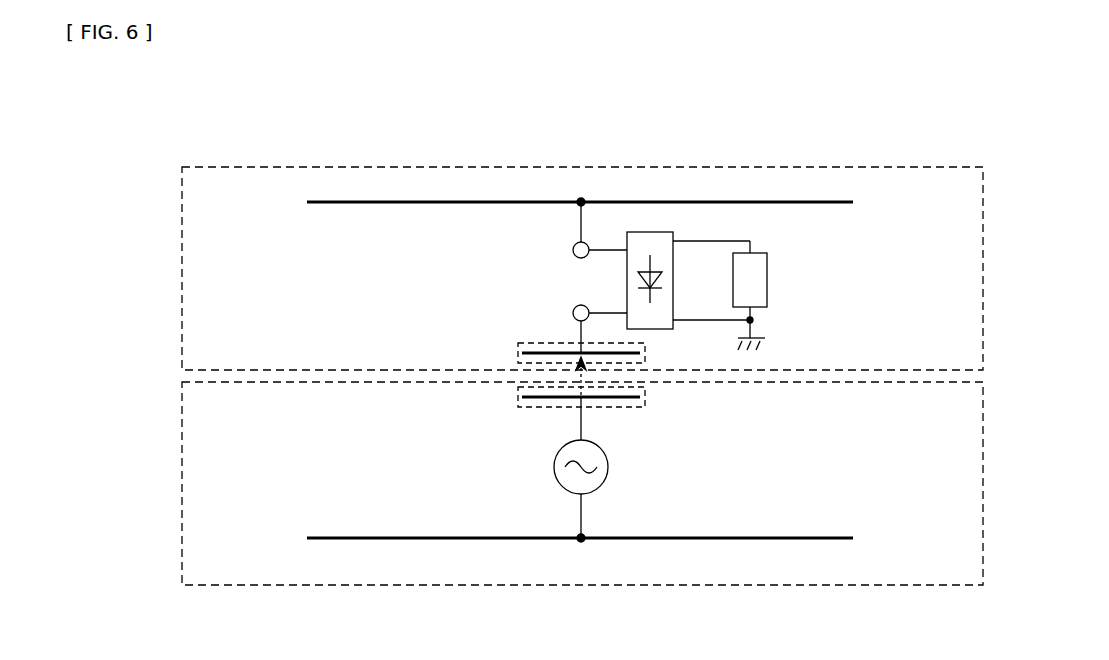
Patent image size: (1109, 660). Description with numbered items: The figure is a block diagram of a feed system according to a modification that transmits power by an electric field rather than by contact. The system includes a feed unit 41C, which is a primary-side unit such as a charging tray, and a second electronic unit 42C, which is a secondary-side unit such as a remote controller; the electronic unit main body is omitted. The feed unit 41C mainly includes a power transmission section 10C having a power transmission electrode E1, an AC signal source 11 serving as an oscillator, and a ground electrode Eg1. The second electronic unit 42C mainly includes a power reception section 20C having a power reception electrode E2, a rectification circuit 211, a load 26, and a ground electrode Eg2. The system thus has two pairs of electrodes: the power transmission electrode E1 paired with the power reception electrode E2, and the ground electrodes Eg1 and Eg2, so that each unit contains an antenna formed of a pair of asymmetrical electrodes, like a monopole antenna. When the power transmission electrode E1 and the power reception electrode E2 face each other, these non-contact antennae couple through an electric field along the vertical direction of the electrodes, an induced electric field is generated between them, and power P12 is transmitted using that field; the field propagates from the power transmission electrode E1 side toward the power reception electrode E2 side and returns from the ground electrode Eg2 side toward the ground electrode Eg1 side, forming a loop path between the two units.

The second electronic unit 42C is at (580, 166).
The feed unit 41C is at (582, 586).
The ground electrode Eg2 is at (750, 203).
The ground electrode Eg1 is at (754, 537).
The rectification circuit 211 is at (626, 282).
The load 26 is at (770, 280).
The power reception electrode E2 is at (533, 349).
The power transmission electrode E1 is at (533, 402).
The power reception section 20C is at (645, 353).
The power transmission section 10C is at (645, 397).
The power P12 is at (575, 378).
The AC signal source 11 is at (609, 467).